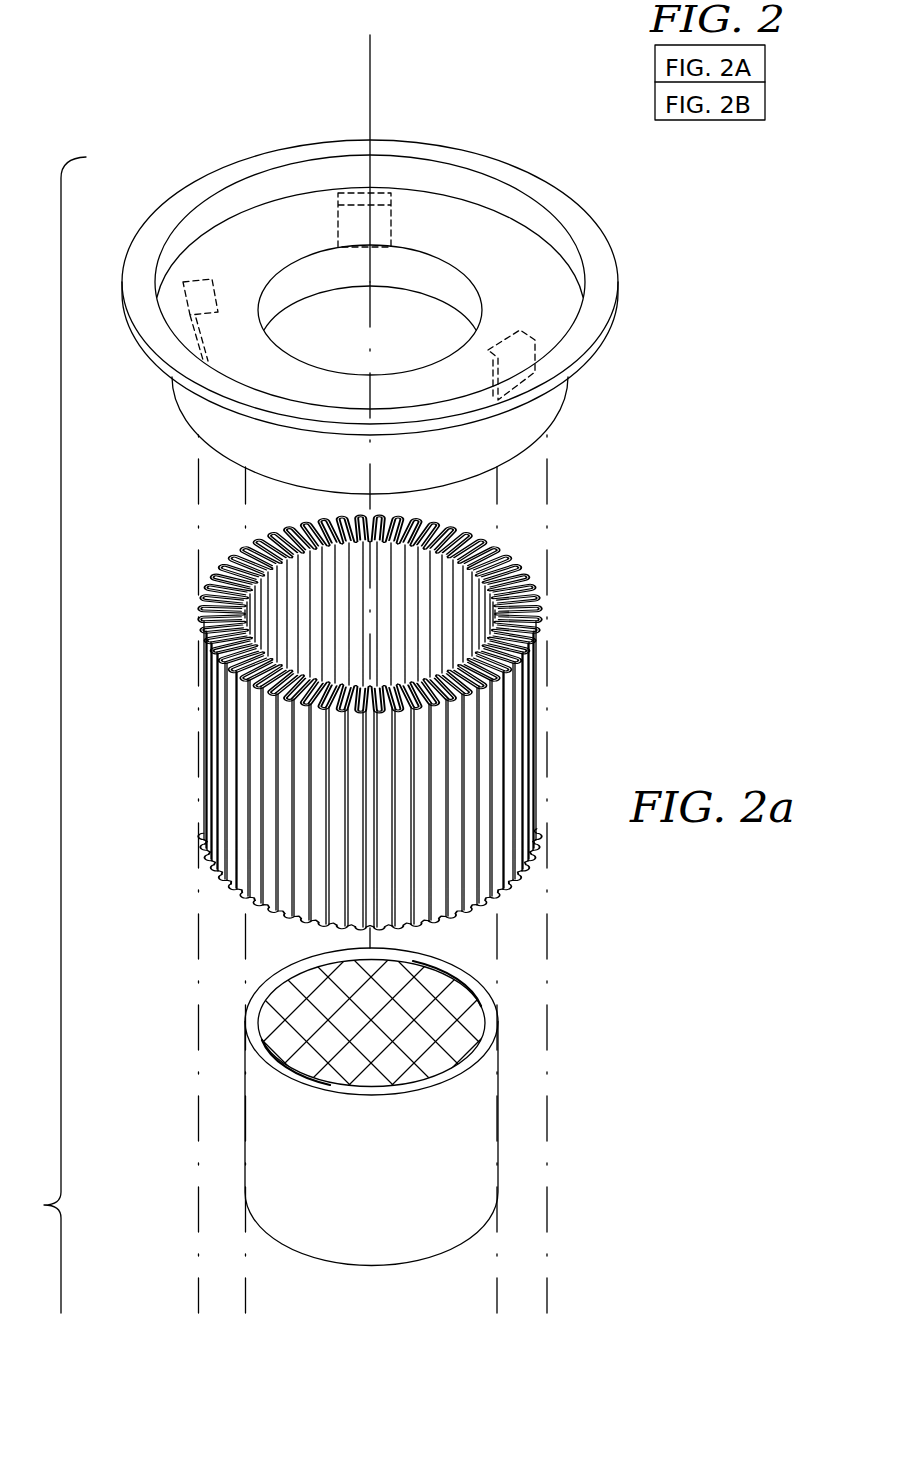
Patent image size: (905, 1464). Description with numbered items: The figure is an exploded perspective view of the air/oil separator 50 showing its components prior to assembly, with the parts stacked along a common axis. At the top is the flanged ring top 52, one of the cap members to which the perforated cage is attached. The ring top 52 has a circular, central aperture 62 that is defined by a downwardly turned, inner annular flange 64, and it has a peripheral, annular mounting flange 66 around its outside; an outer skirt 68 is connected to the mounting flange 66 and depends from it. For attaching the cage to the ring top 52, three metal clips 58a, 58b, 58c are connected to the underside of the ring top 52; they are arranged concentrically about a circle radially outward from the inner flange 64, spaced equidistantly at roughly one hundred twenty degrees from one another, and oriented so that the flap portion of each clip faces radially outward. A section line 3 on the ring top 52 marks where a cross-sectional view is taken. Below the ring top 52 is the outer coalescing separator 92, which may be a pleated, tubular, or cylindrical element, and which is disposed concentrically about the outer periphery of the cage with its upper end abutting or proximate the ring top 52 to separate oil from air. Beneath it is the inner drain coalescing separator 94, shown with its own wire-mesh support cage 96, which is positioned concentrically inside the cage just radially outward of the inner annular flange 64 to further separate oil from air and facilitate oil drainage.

The section line 3 is at (370, 35).
The air/oil separator 50 is at (47, 735).
The flanged ring top 52 is at (150, 430).
The metal clip 58a is at (514, 337).
The metal clip 58b is at (205, 285).
The metal clip 58c is at (352, 196).
The central aperture 62 is at (416, 348).
The inner annular flange 64 is at (300, 287).
The mounting flange 66 is at (590, 232).
The outer skirt 68 is at (556, 399).
The outer coalescing separator 92 is at (545, 690).
The inner drain coalescing separator 94 is at (497, 1092).
The wire-mesh support cage 96 is at (460, 975).